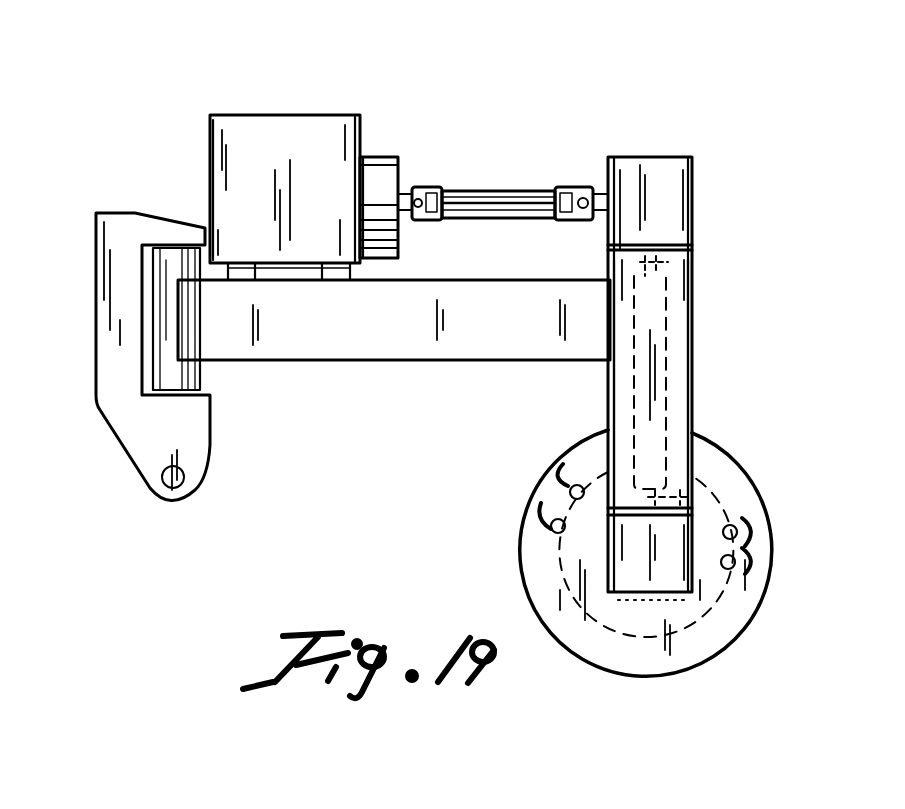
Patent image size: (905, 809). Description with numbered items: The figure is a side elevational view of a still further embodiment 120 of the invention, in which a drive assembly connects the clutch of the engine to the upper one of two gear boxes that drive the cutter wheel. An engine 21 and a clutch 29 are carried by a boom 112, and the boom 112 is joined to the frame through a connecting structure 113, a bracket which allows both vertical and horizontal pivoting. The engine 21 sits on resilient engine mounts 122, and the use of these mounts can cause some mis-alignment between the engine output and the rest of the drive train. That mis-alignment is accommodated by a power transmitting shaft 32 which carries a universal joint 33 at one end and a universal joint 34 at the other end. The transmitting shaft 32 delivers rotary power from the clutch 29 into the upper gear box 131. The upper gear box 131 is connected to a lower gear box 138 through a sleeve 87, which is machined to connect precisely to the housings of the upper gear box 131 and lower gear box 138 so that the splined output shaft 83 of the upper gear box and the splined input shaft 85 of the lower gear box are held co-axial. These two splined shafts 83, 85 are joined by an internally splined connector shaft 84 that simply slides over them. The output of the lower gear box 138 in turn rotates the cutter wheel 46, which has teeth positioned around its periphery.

The embodiment 120 is at (528, 82).
The engine 21 is at (292, 132).
The clutch 29 is at (388, 150).
The universal joint 33 is at (432, 185).
The power transmitting shaft 32 is at (500, 186).
The universal joint 34 is at (578, 185).
The upper gear box 131 is at (677, 165).
The splined output shaft 83 is at (668, 262).
The sleeve 87 is at (685, 358).
The internally splined connector shaft 84 is at (664, 425).
The splined input shaft 85 is at (690, 492).
The cutter wheel 46 is at (747, 603).
The lower gear box 138 is at (628, 563).
The boom 112 is at (438, 345).
The resilient engine mounts 122 is at (248, 281).
The connecting structure 113 is at (133, 430).